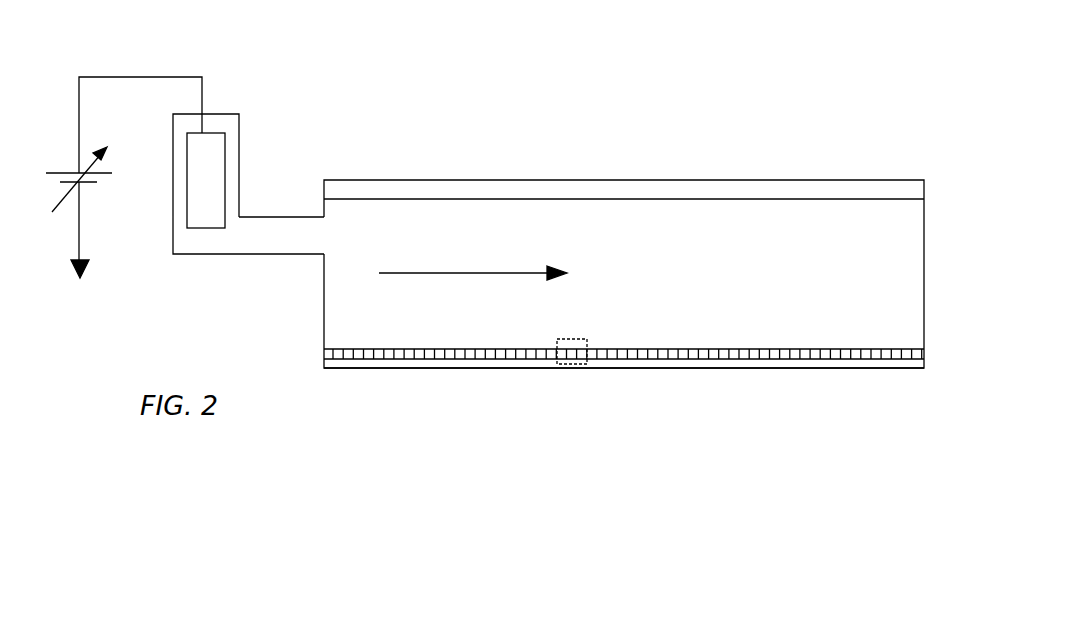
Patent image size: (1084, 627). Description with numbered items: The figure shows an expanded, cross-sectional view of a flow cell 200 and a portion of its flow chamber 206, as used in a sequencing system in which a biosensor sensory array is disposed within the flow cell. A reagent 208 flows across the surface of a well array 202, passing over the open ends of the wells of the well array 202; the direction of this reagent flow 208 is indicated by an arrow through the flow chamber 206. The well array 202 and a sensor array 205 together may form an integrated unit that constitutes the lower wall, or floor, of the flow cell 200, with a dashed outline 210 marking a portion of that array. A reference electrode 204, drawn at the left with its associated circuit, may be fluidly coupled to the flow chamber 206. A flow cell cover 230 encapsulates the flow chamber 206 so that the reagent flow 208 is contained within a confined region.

The flow cell 200 is at (363, 55).
The well array 202 is at (848, 352).
The reference electrode 204 is at (202, 208).
The sensor array 205 is at (793, 369).
The flow chamber 206 is at (685, 217).
The reagent 208 is at (460, 273).
The grating period 210 is at (575, 364).
The flow cell cover 230 is at (797, 190).